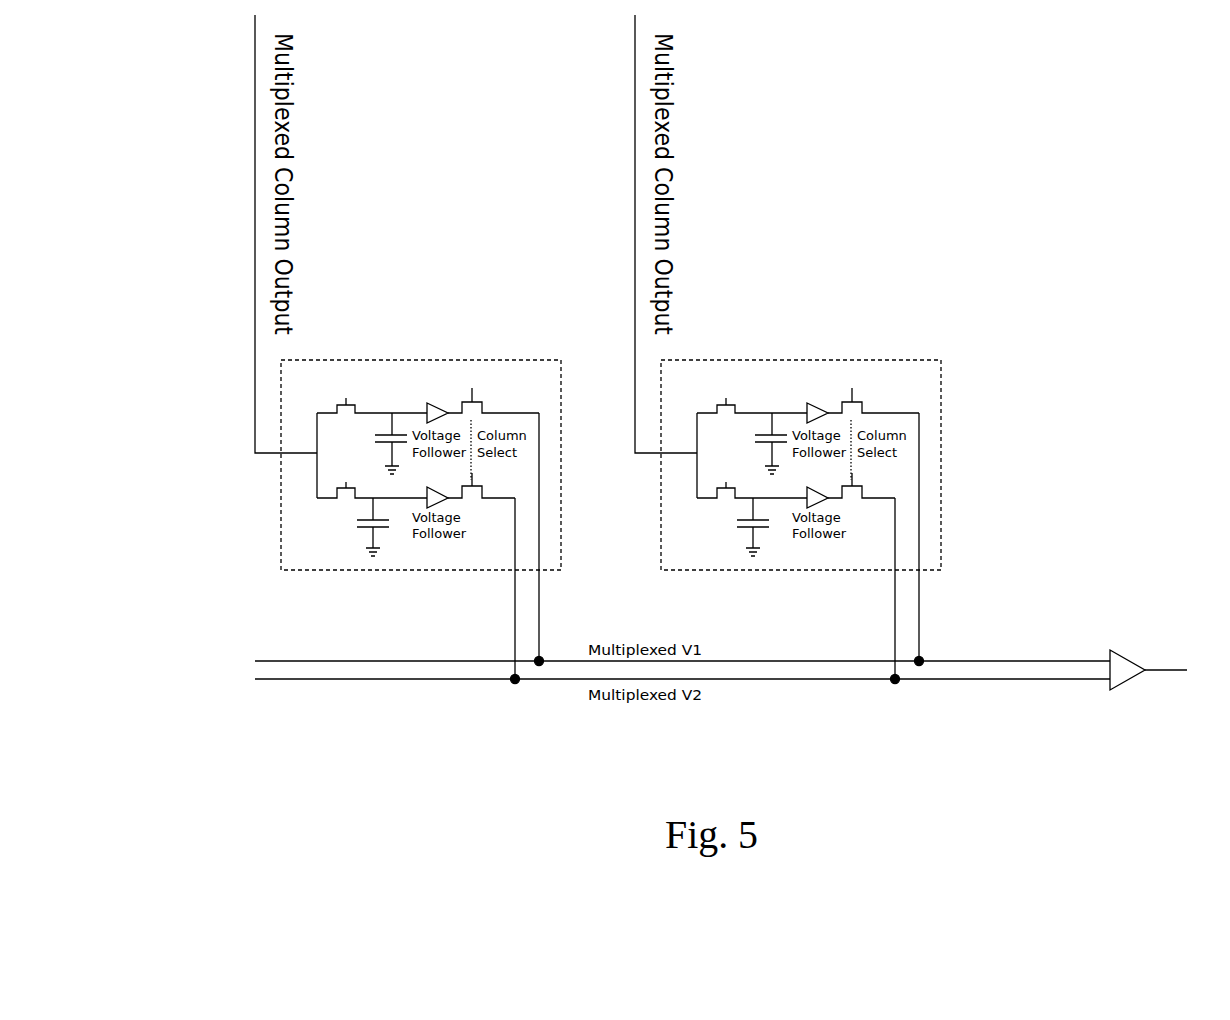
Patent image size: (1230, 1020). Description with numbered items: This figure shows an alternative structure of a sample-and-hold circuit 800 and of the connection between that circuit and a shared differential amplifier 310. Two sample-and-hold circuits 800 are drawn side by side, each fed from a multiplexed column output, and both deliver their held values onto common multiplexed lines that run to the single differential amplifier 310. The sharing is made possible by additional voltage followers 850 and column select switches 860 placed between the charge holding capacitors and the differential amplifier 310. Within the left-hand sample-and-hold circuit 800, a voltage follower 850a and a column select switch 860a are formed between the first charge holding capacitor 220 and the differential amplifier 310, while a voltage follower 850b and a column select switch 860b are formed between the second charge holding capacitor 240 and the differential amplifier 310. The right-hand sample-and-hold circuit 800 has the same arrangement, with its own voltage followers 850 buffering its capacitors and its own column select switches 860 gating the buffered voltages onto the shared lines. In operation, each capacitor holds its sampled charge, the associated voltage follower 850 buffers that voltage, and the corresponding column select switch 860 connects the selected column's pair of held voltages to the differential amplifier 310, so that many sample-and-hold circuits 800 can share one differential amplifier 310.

The first charge holding capacitor 220 is at (381, 430).
The second charge holding capacitor 240 is at (355, 528).
The differential amplifier 310 is at (1112, 650).
The sample-and-hold circuit 800 is at (295, 562).
The voltage follower 850 is at (825, 408).
The voltage follower 850a is at (445, 408).
The voltage follower 850b is at (448, 508).
The column select switch 860 is at (857, 390).
The column select switch 860a is at (474, 390).
The column select switch 860b is at (483, 487).